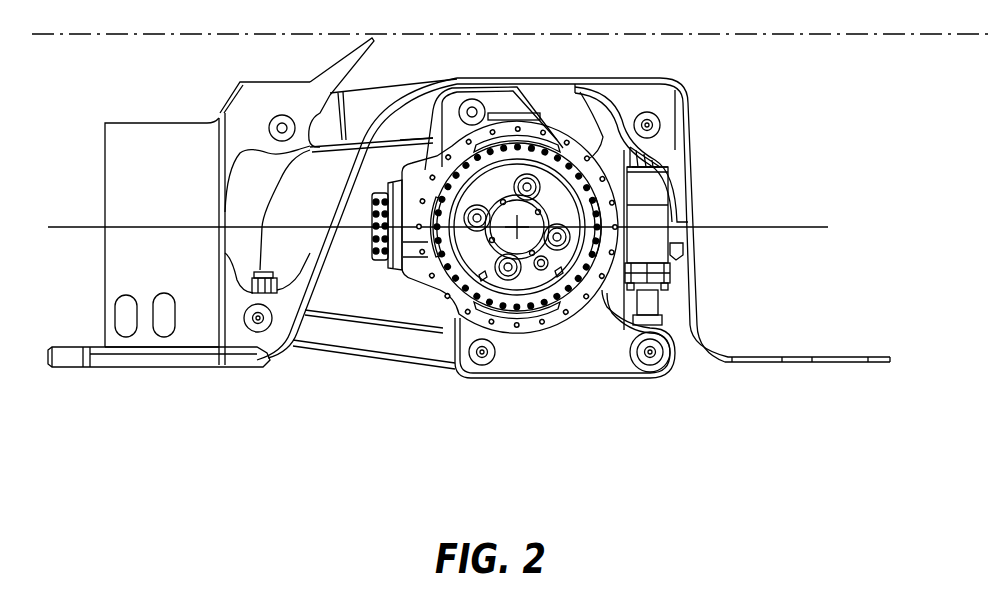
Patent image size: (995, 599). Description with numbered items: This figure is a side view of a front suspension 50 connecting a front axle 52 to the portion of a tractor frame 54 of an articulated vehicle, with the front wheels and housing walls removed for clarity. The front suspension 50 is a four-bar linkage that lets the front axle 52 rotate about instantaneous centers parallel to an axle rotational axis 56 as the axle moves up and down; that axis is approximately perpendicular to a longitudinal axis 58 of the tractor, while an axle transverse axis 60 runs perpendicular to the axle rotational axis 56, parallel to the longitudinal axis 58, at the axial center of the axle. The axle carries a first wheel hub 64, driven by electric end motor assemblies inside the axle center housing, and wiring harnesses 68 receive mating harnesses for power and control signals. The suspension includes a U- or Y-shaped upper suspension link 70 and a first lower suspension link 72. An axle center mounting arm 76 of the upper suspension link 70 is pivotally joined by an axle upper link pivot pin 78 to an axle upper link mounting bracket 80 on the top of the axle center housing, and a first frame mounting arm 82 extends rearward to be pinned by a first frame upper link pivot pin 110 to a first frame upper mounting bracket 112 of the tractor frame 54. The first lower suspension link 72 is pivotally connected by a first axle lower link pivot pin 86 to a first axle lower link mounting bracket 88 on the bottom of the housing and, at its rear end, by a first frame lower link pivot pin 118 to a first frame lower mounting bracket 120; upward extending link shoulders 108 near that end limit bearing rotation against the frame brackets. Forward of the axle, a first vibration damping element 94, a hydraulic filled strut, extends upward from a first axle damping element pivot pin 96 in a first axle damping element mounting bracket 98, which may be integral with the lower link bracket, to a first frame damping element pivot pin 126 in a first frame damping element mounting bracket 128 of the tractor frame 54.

The front suspension 50 is at (338, 389).
The front axle 52 is at (613, 97).
The tractor frame 54 is at (650, 78).
The axle rotational axis 56 is at (517, 227).
The longitudinal axis 58 is at (832, 34).
The axle transverse axis 60 is at (783, 227).
The first wheel hub 64 is at (650, 167).
The wiring harnesses 68 is at (372, 240).
The upper suspension link 70 is at (379, 98).
The first lower suspension link 72 is at (372, 345).
The axle center mounting arm 76 is at (440, 97).
The axle upper link pivot pin 78 is at (473, 112).
The axle upper link mounting bracket 80 is at (500, 103).
The first frame mounting arm 82 is at (311, 148).
The first axle lower link pivot pin 86 is at (488, 358).
The first axle lower link mounting bracket 88 is at (473, 367).
The first vibration damping element 94 is at (650, 240).
The first axle damping element pivot pin 96 is at (645, 358).
The first axle damping element mounting bracket 98 is at (665, 358).
The link shoulders 108 is at (253, 283).
The first frame upper link pivot pin 110 is at (282, 128).
The first frame upper mounting bracket 112 is at (250, 115).
The first frame lower link pivot pin 118 is at (258, 332).
The first frame lower mounting bracket 120 is at (240, 338).
The first frame damping element pivot pin 126 is at (660, 125).
The first frame damping element mounting bracket 128 is at (662, 98).